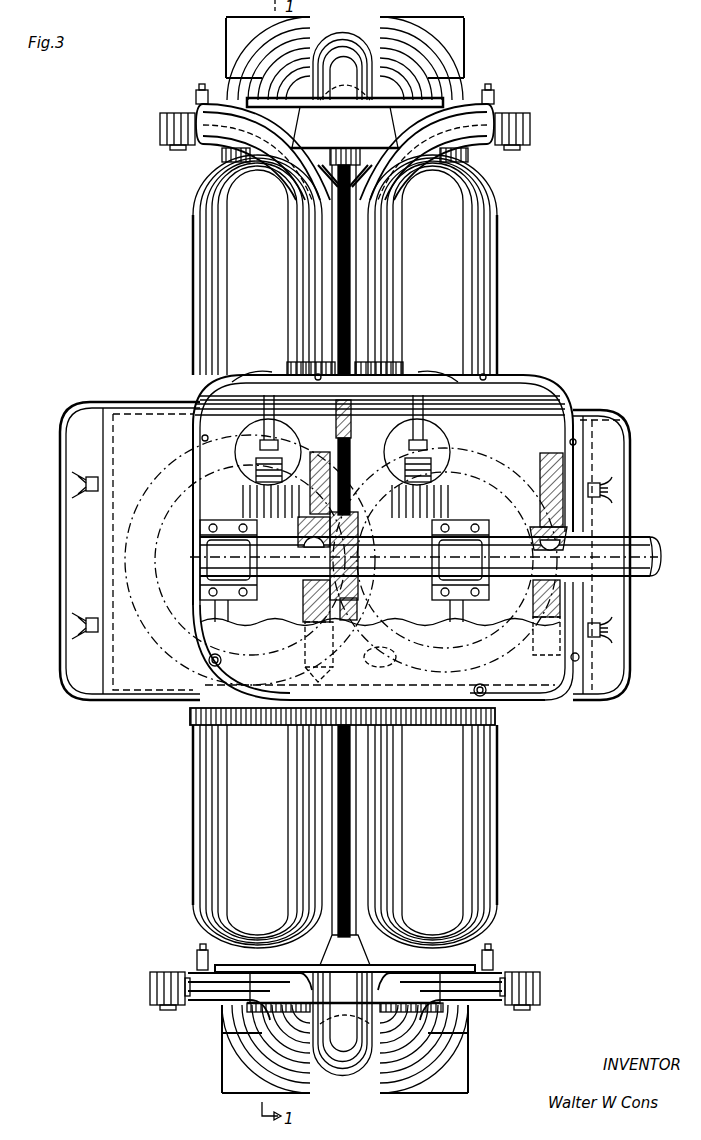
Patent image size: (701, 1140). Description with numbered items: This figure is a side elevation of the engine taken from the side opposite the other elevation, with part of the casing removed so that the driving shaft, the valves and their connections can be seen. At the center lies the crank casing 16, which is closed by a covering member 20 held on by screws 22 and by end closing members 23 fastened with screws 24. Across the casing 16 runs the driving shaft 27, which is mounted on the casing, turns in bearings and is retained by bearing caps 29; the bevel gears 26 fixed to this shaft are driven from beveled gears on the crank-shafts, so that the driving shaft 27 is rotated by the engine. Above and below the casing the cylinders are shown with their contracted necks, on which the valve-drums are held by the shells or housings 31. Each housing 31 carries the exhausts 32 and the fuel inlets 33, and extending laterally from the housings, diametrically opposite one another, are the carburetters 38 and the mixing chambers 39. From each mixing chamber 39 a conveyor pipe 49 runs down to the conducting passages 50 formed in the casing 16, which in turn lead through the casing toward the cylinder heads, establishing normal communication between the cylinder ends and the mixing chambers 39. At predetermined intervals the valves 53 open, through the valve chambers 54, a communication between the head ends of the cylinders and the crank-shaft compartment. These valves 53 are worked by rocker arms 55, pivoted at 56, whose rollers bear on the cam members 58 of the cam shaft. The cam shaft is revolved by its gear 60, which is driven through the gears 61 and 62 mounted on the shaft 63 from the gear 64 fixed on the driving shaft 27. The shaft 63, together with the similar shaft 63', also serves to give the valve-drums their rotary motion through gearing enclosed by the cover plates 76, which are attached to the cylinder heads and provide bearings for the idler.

The casing 16 is at (556, 406).
The covering member 20 is at (528, 690).
The screws 22 is at (210, 665).
The end closing members 23 is at (82, 557).
The screws 24 is at (86, 484).
The bevel gears 26 is at (326, 502).
The driving shaft 27 is at (661, 556).
The bearing caps 29 is at (225, 554).
The housings 31 is at (334, 134).
The exhausts 32 is at (226, 48).
The fuel inlets 33 is at (333, 36).
The carburetters 38 is at (530, 129).
The mixing chambers 39 is at (482, 112).
The conveyor pipes 49 is at (292, 235).
The conducting passages 50 is at (295, 362).
The valves 53 is at (256, 450).
The valve chambers 54 is at (245, 491).
The rocker arms 55 is at (222, 385).
The pivot 56 is at (295, 379).
The cam members 58 is at (440, 406).
The gear 60 is at (353, 465).
The gear 61 is at (351, 422).
The gear 62 is at (365, 606).
The shaft 63 is at (376, 270).
The shaft 63' is at (370, 845).
The gear 64 is at (346, 608).
The cover plates 76 is at (378, 166).